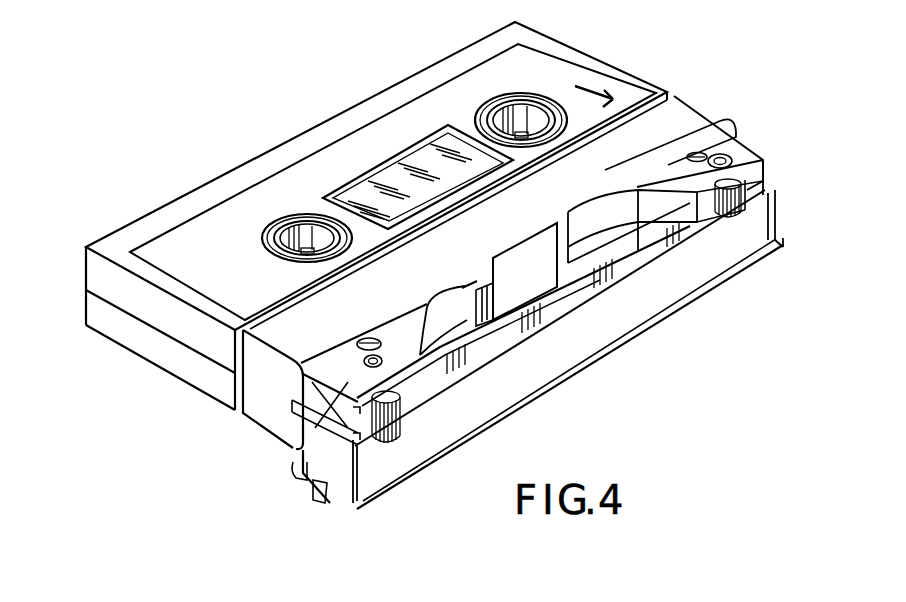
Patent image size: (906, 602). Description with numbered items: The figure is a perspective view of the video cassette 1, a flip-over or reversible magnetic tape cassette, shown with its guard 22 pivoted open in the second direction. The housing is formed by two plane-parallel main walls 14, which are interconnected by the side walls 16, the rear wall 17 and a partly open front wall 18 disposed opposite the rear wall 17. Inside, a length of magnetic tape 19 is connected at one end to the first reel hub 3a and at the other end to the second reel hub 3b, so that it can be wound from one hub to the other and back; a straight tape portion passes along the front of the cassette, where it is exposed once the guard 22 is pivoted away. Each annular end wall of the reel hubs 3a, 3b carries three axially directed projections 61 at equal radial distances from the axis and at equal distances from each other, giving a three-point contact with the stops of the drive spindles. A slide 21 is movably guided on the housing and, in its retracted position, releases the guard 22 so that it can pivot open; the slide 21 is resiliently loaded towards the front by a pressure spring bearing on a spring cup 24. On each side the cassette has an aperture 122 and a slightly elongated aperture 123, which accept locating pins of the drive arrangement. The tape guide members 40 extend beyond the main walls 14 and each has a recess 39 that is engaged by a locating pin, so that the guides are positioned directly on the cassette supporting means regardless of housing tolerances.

The video cassette 1 is at (367, 94).
The main wall 14 is at (442, 93).
The side wall 16 is at (645, 83).
The rear wall 17 is at (298, 136).
The first reel hub 3a is at (309, 210).
The second reel hub 3b is at (554, 82).
The axially directed projections 61 is at (310, 265).
The front wall 18 is at (608, 202).
The spring cup 24 is at (523, 270).
The magnetic tape 19 is at (515, 330).
The guard 22 is at (523, 387).
The slide 21 is at (257, 410).
The aperture 122 is at (696, 152).
The aperture 123 is at (372, 336).
The recess 39 is at (726, 155).
The tape guide member 40 is at (708, 162).